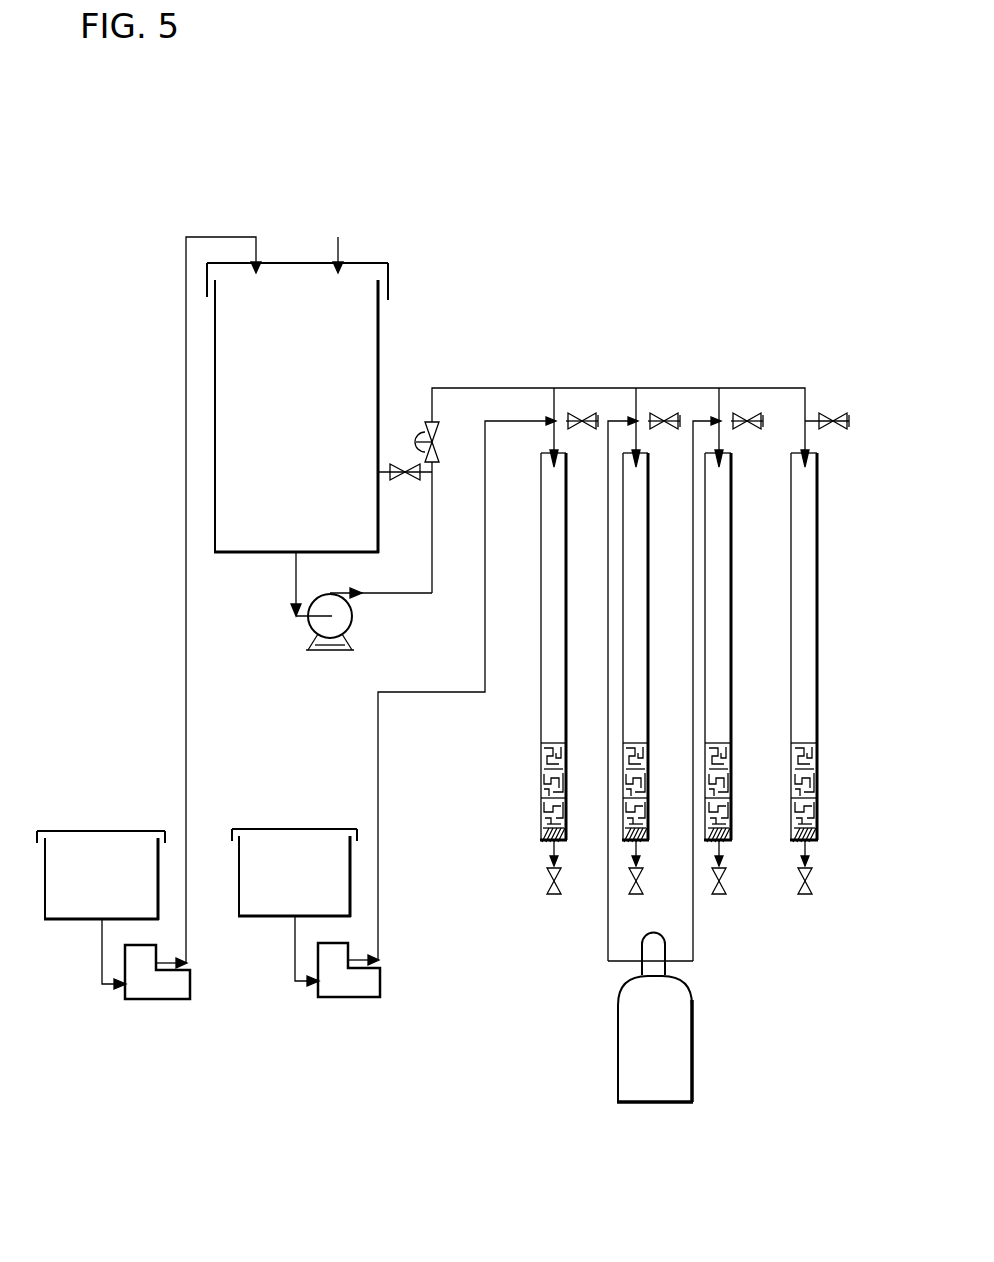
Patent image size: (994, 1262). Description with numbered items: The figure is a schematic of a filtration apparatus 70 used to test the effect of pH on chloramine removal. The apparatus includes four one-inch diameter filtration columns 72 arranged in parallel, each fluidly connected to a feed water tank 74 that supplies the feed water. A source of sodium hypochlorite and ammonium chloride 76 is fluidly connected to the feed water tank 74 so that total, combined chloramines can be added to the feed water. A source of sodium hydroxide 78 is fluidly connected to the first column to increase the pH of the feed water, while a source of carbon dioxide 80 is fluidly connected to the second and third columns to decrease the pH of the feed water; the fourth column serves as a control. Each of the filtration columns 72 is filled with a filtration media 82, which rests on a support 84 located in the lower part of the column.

The filtration apparatus 70 is at (453, 200).
The filtration columns 72 is at (818, 553).
The feed water tank 74 is at (287, 428).
The source of sodium hypochlorite and ammonium chloride 76 is at (87, 831).
The source of sodium hydroxide 78 is at (297, 829).
The source of carbon dioxide 80 is at (618, 1043).
The filtration media 82 is at (818, 762).
The support 84 is at (818, 830).